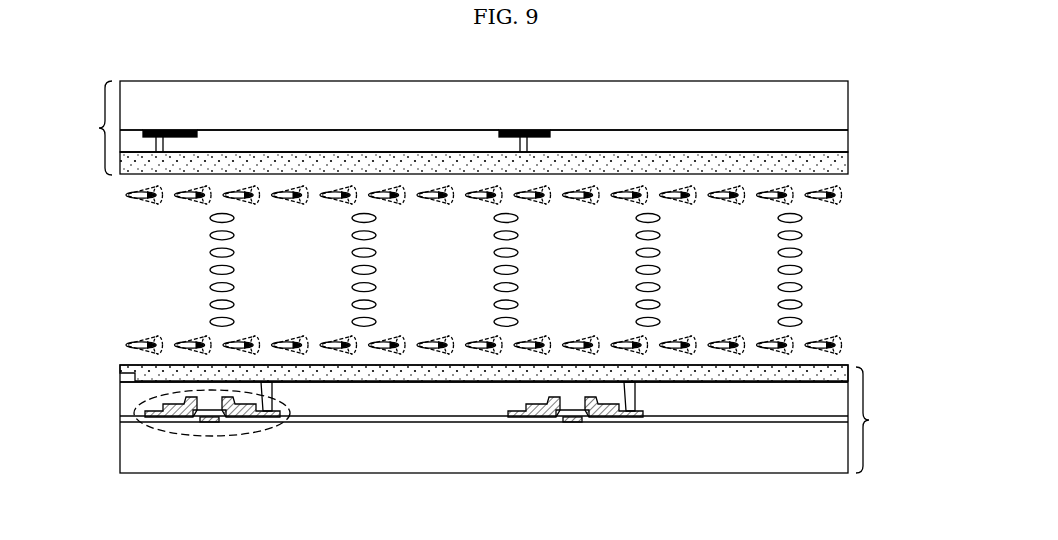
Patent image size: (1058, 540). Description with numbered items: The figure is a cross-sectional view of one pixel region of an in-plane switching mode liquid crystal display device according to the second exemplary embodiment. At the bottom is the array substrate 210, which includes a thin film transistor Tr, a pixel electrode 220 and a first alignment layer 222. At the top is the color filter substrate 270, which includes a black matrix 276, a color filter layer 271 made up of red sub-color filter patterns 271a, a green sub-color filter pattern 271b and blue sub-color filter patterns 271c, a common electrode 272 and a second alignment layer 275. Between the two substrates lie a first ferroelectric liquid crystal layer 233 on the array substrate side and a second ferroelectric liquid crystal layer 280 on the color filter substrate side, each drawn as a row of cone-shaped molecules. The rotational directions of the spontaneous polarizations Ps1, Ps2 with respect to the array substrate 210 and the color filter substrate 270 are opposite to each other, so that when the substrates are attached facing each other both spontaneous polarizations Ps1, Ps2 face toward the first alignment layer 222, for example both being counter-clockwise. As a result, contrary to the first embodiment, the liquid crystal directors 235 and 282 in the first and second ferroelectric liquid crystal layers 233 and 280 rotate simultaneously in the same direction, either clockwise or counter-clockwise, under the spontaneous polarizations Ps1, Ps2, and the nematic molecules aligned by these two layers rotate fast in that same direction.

The array substrate 210 is at (508, 419).
The pixel electrode 220 is at (378, 380).
The first alignment layer 222 is at (176, 366).
The first ferroelectric liquid crystal layer 233 is at (860, 344).
The liquid crystal director 235 is at (130, 342).
The color filter substrate 270 is at (456, 128).
The color filter layer 271 is at (577, 88).
The red sub-color filter pattern 271a is at (264, 137).
The green sub-color filter pattern 271b is at (573, 137).
The blue sub-color filter pattern 271c is at (137, 128).
The common electrode 272 is at (838, 157).
The second alignment layer 275 is at (850, 169).
The black matrix 276 is at (178, 130).
The second ferroelectric liquid crystal layer 280 is at (862, 197).
The liquid crystal director 282 is at (770, 201).
The spontaneous polarization Ps1 is at (832, 343).
The spontaneous polarization Ps2 is at (830, 203).
The thin film transistor Tr is at (212, 438).